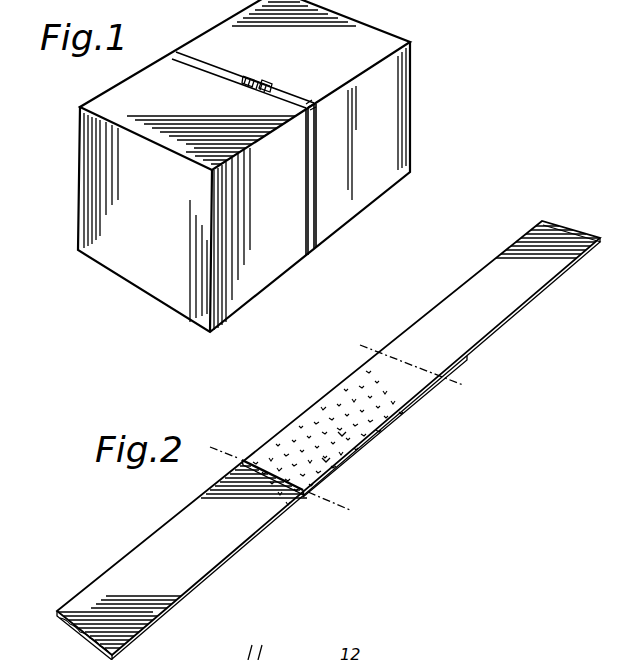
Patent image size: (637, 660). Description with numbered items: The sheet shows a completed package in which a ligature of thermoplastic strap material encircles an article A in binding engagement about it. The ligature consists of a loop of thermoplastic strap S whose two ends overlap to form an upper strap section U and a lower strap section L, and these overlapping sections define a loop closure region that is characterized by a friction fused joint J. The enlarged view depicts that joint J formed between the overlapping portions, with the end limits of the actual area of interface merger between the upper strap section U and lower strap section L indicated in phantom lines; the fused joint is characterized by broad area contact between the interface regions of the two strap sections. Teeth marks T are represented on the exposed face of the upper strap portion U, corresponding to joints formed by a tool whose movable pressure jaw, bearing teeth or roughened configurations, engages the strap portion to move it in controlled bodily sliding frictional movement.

In FIG. 1, the article A is at (395, 95).
In FIG. 1, the thermoplastic strap S is at (315, 183).
In FIG. 1, the friction fused joint J is at (279, 82).
In FIG. 2, the friction fused joint J is at (313, 402).
In FIG. 1, the upper strap portion U is at (259, 85).
In FIG. 2, the upper strap portion U is at (340, 387).
In FIG. 1, the lower strap portion L is at (245, 87).
In FIG. 2, the lower strap portion L is at (388, 430).
In FIG. 2, the teeth marks T is at (326, 462).